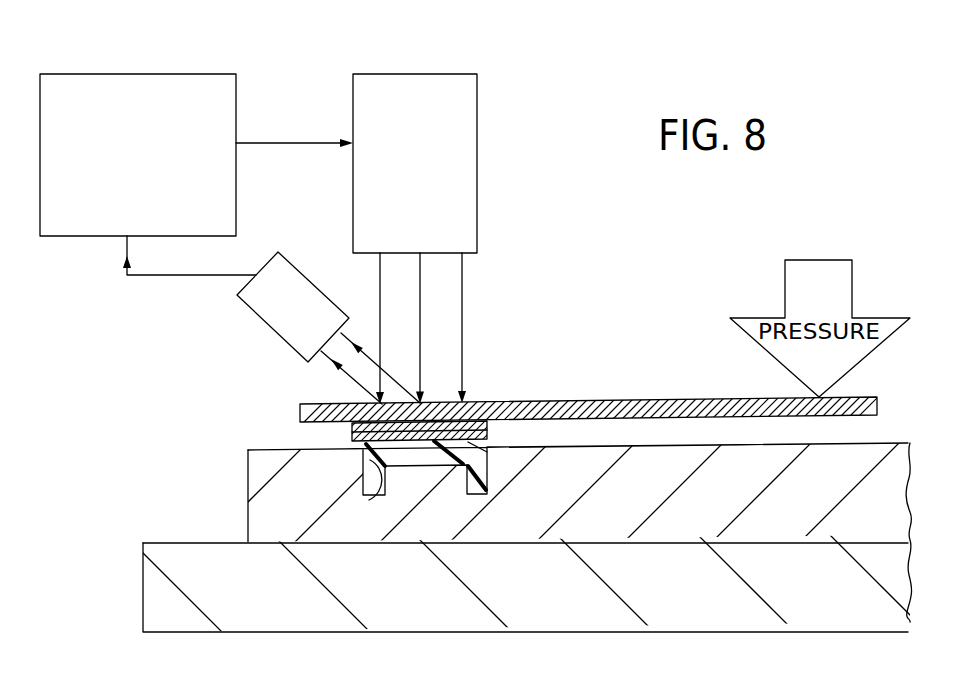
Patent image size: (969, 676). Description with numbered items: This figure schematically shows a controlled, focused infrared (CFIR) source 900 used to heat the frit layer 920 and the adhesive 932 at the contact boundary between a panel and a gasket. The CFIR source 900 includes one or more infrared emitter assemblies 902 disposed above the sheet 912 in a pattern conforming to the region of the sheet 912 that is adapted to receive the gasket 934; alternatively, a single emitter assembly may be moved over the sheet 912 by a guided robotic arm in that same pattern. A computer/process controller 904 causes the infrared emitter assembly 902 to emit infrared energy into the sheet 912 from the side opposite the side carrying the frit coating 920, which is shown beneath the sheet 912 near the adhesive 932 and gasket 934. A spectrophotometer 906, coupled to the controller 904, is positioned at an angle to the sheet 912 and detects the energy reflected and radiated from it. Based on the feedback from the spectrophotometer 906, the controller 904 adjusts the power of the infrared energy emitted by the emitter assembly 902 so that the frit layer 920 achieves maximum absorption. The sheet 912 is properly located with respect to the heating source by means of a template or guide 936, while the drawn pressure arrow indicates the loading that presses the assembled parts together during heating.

The controlled, focused infrared (CFIR) source 900 is at (529, 62).
The infrared emitter assembly 902 is at (442, 181).
The computer/process controller 904 is at (160, 179).
The spectrophotometer 906 is at (327, 318).
The sheet 912 is at (642, 399).
The frit layer 920 is at (505, 404).
The adhesive 932 is at (352, 433).
The gasket 934 is at (498, 465).
The template or guide 936 is at (378, 490).